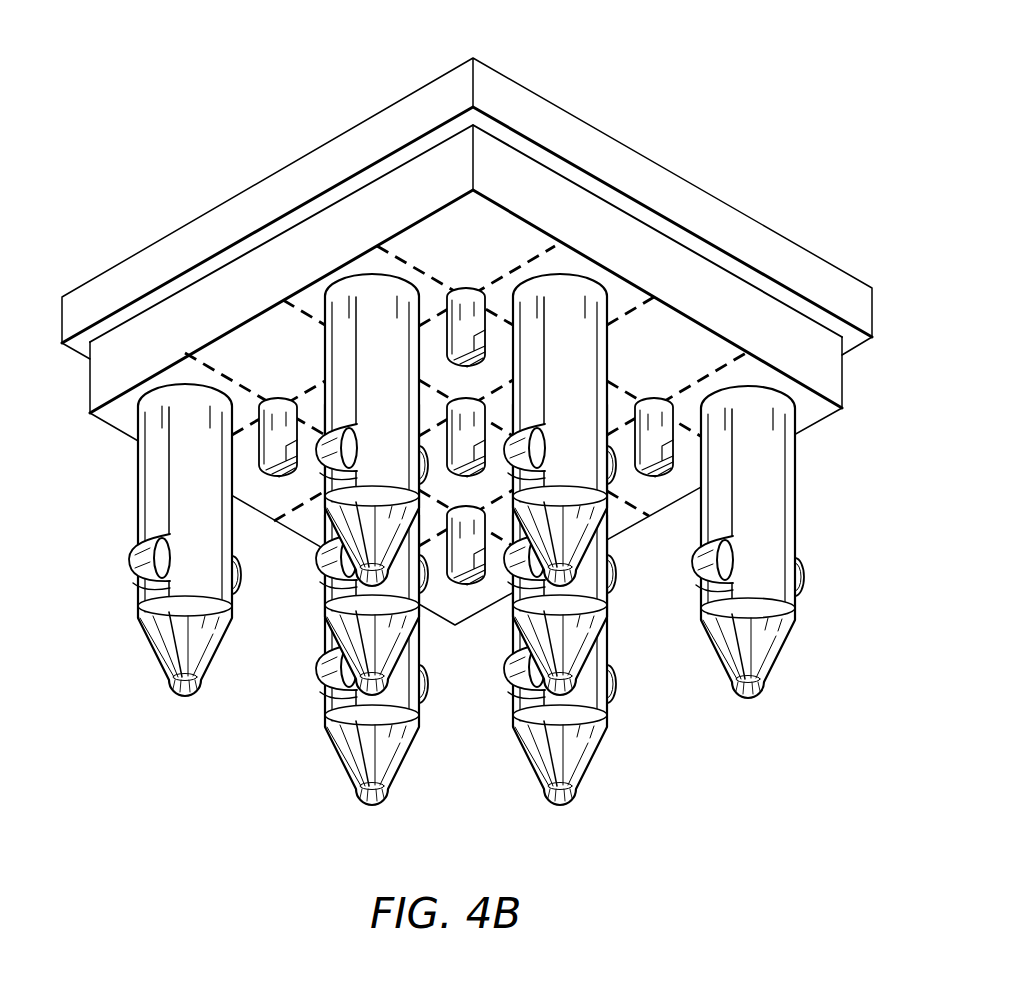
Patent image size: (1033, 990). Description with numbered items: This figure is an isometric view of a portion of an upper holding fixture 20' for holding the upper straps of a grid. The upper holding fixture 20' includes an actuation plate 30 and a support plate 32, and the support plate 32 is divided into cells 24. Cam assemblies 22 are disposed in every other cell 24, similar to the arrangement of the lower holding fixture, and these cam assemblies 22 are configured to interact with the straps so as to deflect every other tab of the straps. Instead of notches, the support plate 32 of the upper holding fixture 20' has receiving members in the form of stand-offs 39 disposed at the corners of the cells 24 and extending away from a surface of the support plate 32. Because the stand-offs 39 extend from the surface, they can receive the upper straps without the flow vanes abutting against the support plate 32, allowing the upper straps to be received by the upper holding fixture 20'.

The upper holding fixture 20' is at (467, 426).
The cam assemblies 22 is at (158, 653).
The cells 24 is at (276, 334).
The actuation plate 30 is at (582, 133).
The support plate 32 is at (642, 245).
The stand-offs 39 is at (452, 327).